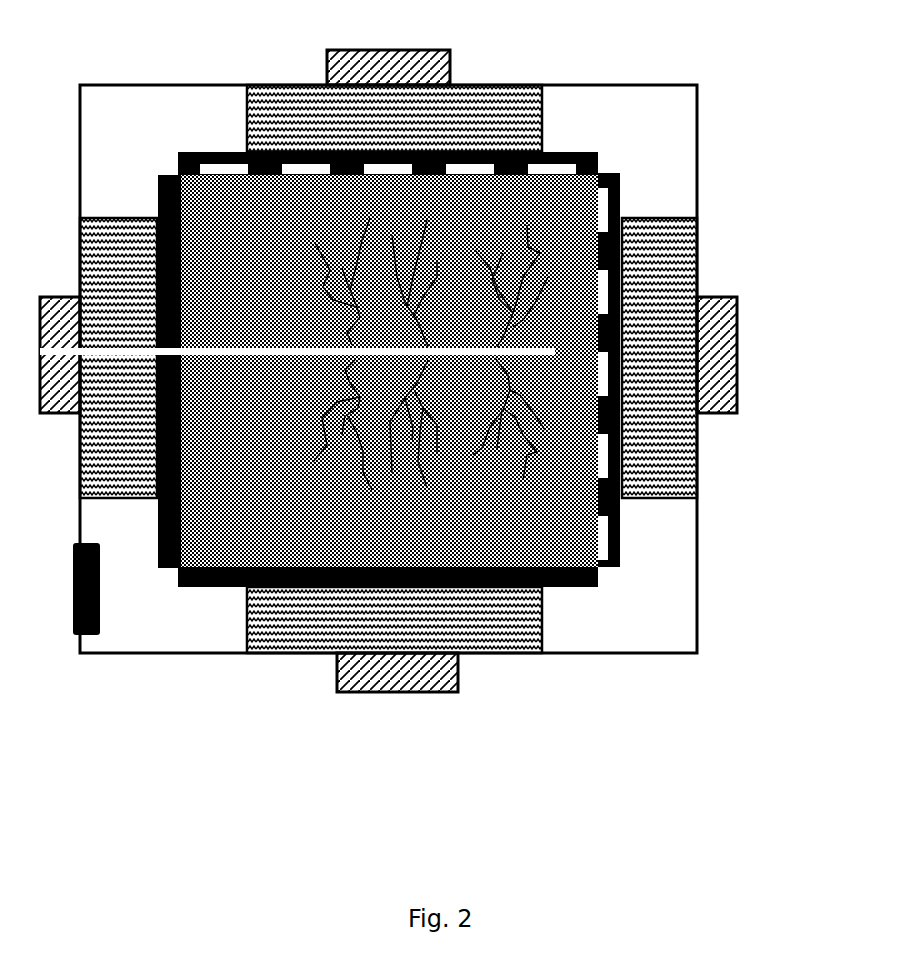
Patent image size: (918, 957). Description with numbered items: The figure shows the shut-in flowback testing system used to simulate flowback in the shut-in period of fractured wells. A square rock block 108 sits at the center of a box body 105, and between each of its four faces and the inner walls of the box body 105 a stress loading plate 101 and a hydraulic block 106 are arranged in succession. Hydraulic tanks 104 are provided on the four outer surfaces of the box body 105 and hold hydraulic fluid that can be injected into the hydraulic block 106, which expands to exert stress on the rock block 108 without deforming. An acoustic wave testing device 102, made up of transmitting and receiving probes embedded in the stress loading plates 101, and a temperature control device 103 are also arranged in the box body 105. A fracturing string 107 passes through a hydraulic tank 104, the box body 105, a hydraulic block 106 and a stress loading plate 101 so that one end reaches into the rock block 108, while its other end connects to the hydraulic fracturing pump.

The stress loading plate 101 is at (367, 337).
The acoustic wave testing device 102 is at (640, 393).
The temperature control device 103 is at (135, 589).
The hydraulic tank 104 is at (407, 46).
The box body 105 is at (417, 347).
The hydraulic block 106 is at (456, 369).
The fracturing string 107 is at (297, 330).
The square rock block 108 is at (388, 658).